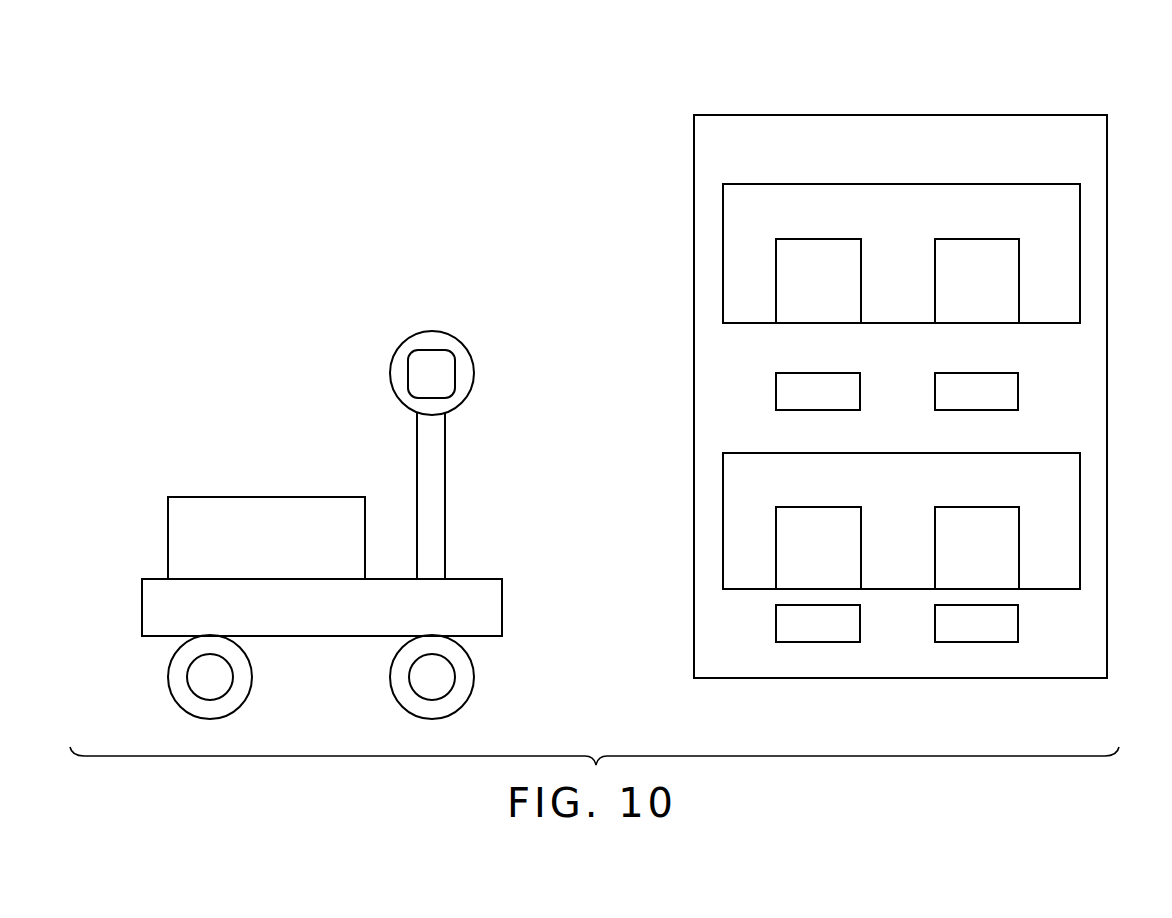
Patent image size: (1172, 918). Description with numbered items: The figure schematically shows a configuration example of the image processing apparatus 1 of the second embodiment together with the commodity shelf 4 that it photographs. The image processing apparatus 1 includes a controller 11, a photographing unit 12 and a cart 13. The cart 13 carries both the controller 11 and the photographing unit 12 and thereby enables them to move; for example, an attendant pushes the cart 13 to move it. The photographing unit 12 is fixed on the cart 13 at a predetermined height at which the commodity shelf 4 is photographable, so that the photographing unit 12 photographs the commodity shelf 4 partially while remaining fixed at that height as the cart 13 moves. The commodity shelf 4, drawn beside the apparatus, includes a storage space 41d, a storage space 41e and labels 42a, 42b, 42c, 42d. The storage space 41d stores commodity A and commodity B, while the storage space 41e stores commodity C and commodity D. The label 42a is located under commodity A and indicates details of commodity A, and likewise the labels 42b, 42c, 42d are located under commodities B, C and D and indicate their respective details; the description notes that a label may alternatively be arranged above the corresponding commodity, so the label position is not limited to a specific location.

The image processing apparatus 1 is at (240, 172).
The commodity shelf 4 is at (708, 115).
The controller 11 is at (178, 497).
The photographing unit 12 is at (432, 331).
The cart 13 is at (130, 597).
The storage space 41d is at (723, 254).
The storage space 41e is at (723, 521).
The label 42a is at (832, 373).
The label 42b is at (997, 373).
The label 42c is at (834, 643).
The label 42d is at (998, 643).